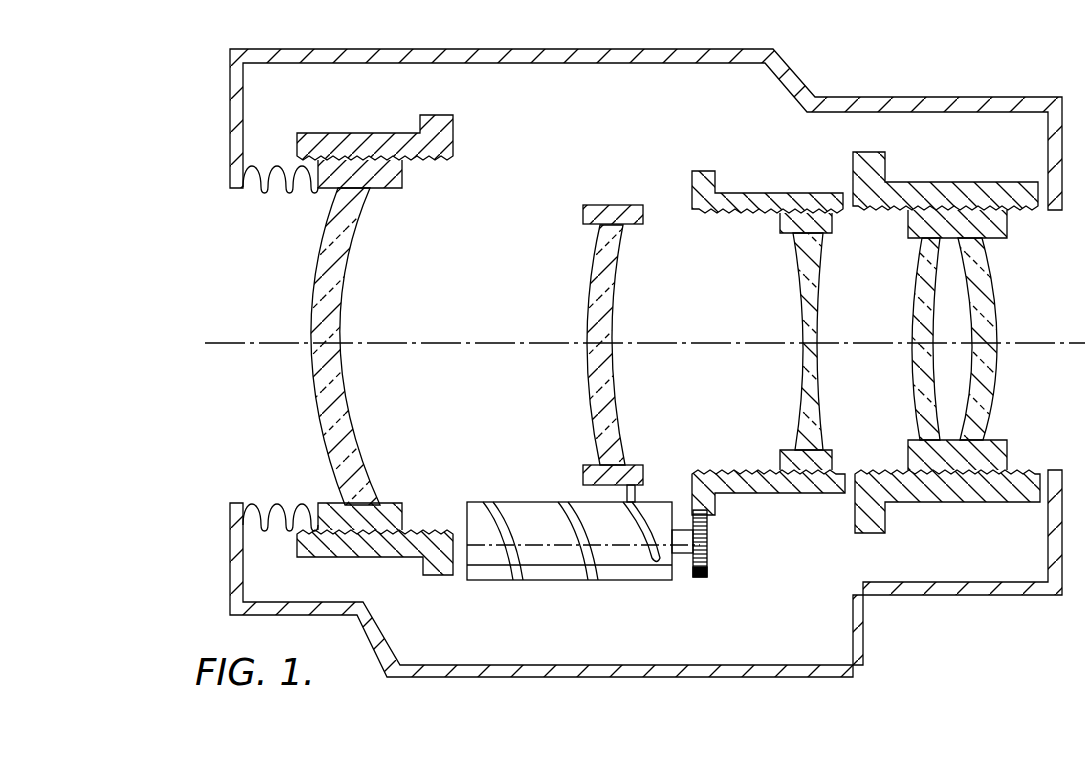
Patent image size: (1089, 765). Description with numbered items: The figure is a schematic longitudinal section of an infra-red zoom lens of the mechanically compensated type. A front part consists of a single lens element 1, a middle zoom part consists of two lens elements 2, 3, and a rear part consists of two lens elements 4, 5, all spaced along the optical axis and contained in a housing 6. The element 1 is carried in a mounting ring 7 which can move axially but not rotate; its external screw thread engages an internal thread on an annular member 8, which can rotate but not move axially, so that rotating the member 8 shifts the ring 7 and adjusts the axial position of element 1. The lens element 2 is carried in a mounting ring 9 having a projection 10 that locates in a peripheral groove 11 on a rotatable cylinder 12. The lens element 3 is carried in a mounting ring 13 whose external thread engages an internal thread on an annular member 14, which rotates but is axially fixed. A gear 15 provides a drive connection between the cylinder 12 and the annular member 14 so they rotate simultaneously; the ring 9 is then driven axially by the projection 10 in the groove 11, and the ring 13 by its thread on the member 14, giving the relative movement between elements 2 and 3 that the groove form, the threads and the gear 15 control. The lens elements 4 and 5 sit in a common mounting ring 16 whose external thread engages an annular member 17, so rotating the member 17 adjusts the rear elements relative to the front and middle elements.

The lens element 1 is at (345, 282).
The lens element 2 is at (615, 290).
The lens element 3 is at (820, 292).
The lens element 4 is at (917, 290).
The lens element 5 is at (996, 296).
The housing 6 is at (506, 64).
The mounting ring 7 is at (403, 177).
The annular member 8 is at (382, 558).
The mounting ring 9 is at (597, 205).
The projection 10 is at (637, 491).
The peripheral groove 11 is at (557, 502).
The rotatable cylinder 12 is at (631, 575).
The mounting ring 13 is at (790, 230).
The annular member 14 is at (763, 494).
The gear 15 is at (710, 560).
The common mounting ring 16 is at (1006, 231).
The annular member 17 is at (924, 503).